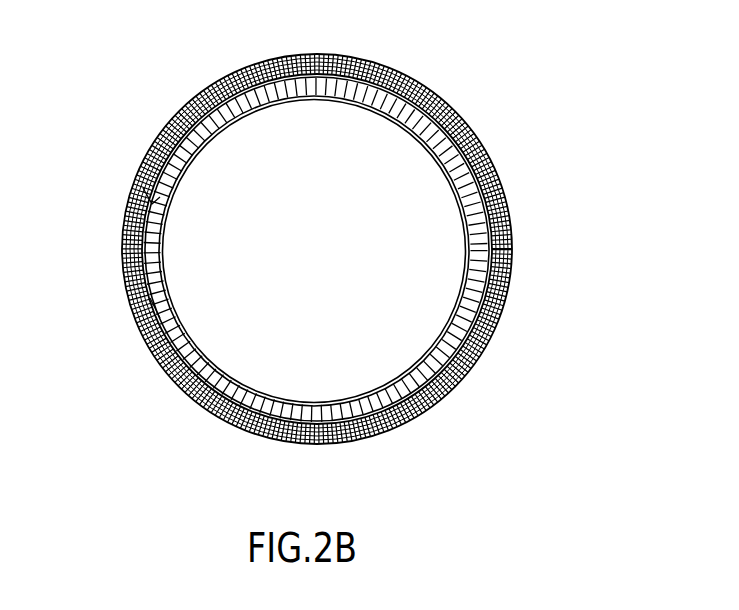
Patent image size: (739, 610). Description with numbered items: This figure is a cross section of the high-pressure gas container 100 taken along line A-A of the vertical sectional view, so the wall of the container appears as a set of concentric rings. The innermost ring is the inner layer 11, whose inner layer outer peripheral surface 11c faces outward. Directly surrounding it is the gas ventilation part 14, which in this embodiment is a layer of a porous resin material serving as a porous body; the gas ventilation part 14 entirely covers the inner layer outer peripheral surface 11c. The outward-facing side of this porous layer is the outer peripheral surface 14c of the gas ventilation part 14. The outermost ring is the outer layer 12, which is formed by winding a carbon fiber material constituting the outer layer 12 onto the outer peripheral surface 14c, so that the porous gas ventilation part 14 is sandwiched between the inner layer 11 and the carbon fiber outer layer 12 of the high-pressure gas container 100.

The high-pressure gas container 100 is at (292, 232).
The outer layer 12 is at (168, 122).
The gas ventilation part 14 is at (148, 196).
The outer peripheral surface of the gas ventilation part 14c is at (138, 246).
The inner layer 11 is at (152, 279).
The inner layer outer peripheral surface 11c is at (143, 323).